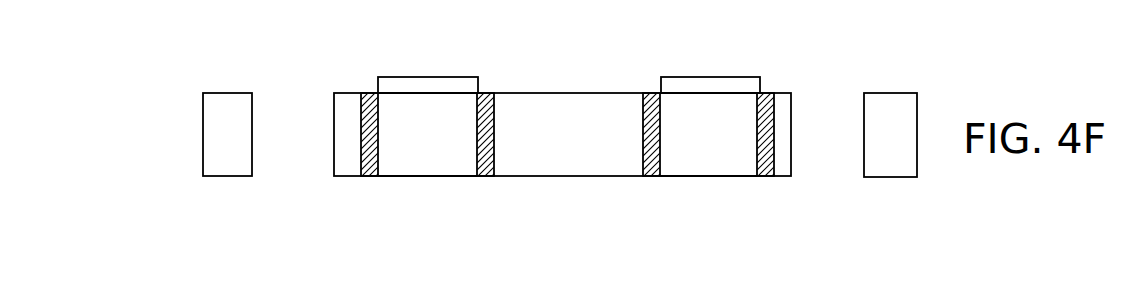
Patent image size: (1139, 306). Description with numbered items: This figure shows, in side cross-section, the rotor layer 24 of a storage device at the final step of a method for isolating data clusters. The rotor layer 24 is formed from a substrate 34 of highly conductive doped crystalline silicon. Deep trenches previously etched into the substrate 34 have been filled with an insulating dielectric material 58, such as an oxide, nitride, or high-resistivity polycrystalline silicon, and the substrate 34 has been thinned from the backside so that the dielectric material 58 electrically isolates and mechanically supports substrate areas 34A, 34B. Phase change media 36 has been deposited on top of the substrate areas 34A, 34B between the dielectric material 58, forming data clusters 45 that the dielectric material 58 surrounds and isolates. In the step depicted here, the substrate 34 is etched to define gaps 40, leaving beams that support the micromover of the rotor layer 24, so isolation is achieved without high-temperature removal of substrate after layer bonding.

The rotor layer 24 is at (193, 87).
The substrate 34 is at (232, 163).
The substrate area 34A is at (460, 167).
The substrate area 34B is at (730, 168).
The phase change media 36 is at (569, 66).
The data cluster 45 is at (417, 87).
The gap 40 is at (287, 157).
The dielectric material 58 is at (372, 177).